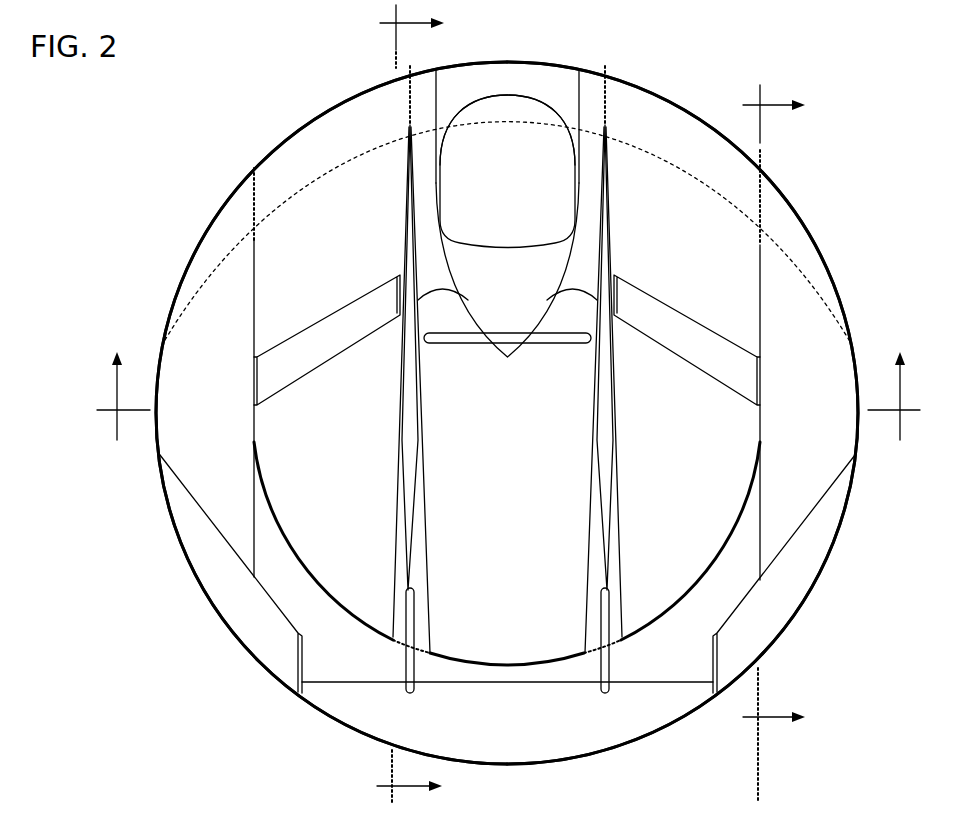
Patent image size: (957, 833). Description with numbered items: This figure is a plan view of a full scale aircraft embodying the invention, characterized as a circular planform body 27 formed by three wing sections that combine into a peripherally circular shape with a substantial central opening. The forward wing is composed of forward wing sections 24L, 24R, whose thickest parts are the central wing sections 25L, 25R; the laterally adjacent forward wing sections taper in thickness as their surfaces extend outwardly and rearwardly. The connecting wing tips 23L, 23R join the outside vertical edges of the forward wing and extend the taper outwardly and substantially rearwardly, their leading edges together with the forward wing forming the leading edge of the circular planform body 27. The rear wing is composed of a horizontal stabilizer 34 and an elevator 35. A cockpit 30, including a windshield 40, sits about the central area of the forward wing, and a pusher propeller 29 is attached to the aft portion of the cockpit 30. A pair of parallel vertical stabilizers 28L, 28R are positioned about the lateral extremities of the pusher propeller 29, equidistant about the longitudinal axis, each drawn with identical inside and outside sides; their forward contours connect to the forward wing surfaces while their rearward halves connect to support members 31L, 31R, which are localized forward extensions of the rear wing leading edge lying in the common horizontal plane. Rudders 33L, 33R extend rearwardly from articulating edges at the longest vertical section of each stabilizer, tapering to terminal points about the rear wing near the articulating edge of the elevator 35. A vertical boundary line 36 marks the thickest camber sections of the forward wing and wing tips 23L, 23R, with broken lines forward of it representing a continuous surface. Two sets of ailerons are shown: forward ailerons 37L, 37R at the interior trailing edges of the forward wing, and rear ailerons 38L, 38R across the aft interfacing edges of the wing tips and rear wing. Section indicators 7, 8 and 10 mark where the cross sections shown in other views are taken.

The section line 7- 7 is at (400, 404).
The section line 8- 8 is at (763, 442).
The section line 10- 10 is at (508, 403).
The wing tip 23L is at (172, 433).
The wing tip 23R is at (775, 213).
The forward wing section 24L is at (315, 147).
The forward wing section 24R is at (652, 108).
The central wing section 25L is at (422, 80).
The central wing section 25R is at (600, 63).
The circular planform body 27 is at (743, 57).
The vertical stabilizer 28L is at (415, 477).
The vertical stabilizer 28R is at (593, 440).
The pusher propeller 29 is at (565, 340).
The cockpit 30 is at (538, 78).
The support member 31L is at (417, 558).
The support member 31R is at (613, 563).
The rudder 33L is at (409, 620).
The rudder 33R is at (607, 623).
The horizontal stabilizer 34 is at (282, 557).
The elevator 35 is at (355, 708).
The vertical boundary line 36 is at (817, 248).
The forward aileron 37L is at (268, 384).
The forward aileron 37R is at (748, 384).
The rear aileron 38L is at (290, 667).
The rear aileron 38R is at (798, 580).
The windshield 40 is at (486, 117).